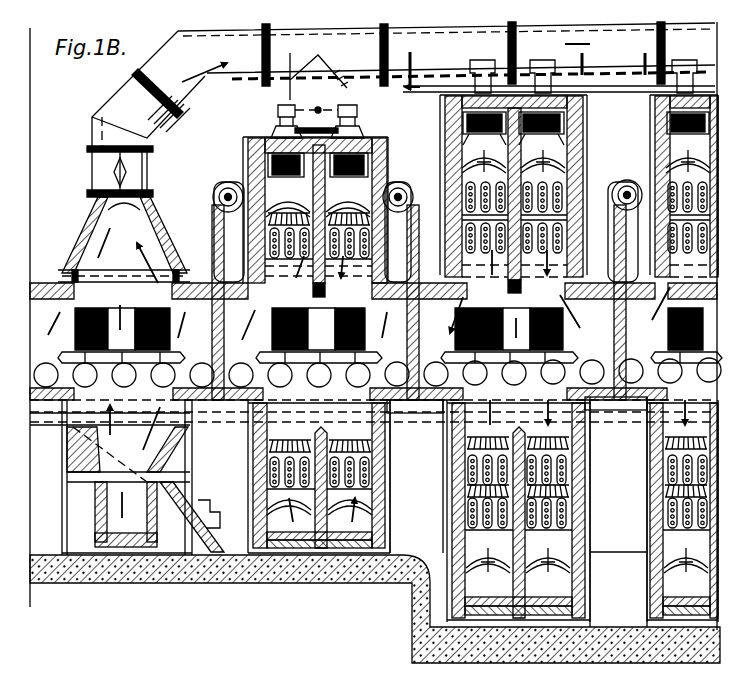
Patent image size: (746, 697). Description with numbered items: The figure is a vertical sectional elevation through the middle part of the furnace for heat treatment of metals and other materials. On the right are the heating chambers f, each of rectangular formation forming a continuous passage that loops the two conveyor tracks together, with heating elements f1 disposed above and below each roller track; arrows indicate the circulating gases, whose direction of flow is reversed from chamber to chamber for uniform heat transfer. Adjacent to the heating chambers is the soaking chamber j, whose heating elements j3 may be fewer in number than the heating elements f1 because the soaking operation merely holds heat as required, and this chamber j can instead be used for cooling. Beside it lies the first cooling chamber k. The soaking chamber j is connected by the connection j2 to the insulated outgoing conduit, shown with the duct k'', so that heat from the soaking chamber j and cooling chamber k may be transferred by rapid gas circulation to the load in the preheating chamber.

The exhaust duct connection k'' is at (297, 95).
The connection to conduit j2 is at (327, 98).
The heating elements f1 is at (588, 170).
The heating elements j3 is at (262, 243).
The first cooling chamber k is at (127, 477).
The soaking chamber j is at (385, 410).
The heating chamber f is at (643, 422).